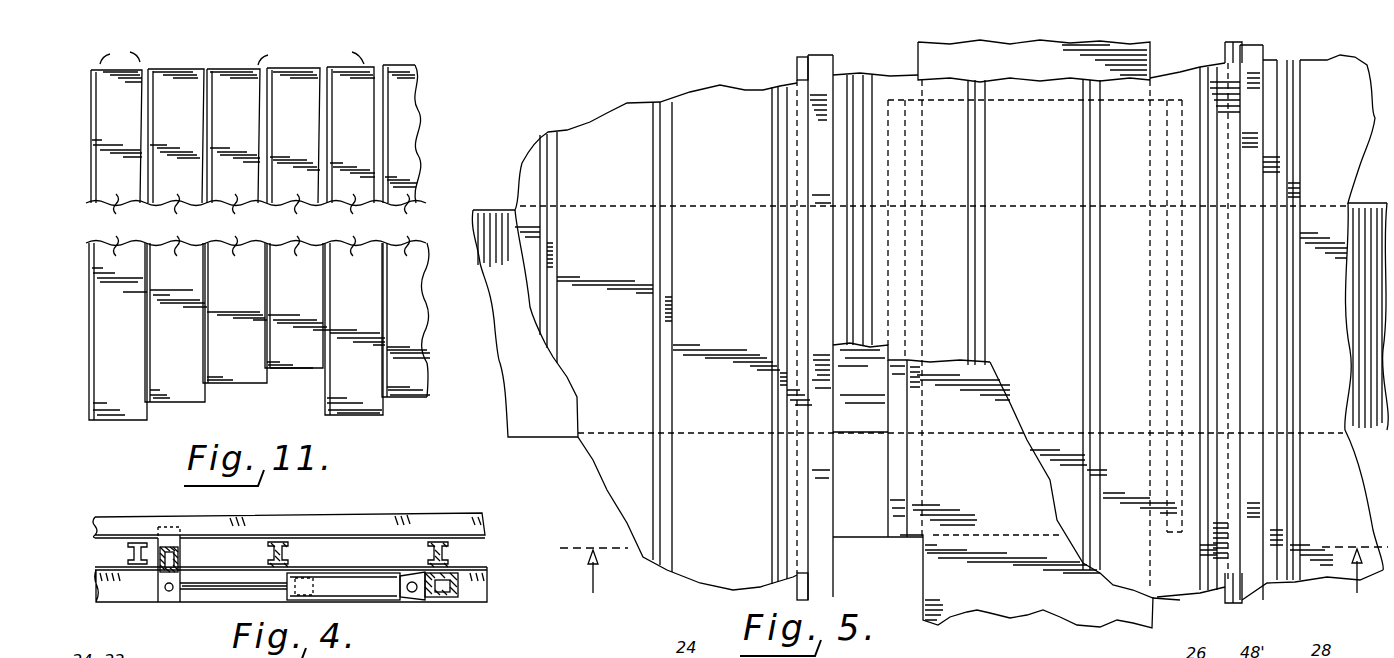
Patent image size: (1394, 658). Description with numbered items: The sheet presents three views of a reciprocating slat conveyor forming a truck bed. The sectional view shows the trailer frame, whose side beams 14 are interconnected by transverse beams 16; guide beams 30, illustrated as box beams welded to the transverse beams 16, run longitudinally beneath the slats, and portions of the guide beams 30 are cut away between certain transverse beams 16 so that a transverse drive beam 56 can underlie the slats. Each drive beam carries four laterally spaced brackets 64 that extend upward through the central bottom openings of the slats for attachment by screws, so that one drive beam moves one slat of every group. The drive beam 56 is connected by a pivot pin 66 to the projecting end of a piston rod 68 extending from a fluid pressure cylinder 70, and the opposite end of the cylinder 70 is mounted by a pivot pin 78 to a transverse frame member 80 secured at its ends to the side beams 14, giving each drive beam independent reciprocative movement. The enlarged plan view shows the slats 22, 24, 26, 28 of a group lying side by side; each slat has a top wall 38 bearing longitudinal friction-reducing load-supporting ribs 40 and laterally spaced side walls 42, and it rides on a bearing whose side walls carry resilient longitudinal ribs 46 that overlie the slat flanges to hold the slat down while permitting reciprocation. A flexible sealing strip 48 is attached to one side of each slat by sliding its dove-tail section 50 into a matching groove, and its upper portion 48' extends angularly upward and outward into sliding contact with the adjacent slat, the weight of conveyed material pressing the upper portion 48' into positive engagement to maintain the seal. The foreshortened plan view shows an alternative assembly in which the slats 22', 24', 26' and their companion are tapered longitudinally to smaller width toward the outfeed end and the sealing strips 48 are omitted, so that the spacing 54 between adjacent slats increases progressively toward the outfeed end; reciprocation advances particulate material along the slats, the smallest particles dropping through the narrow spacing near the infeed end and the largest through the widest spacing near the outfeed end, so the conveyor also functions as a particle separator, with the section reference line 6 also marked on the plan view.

In FIG. 11, the spacing between adjacent slats 54 is at (232, 52).
In FIG. 11, the slat 22' is at (237, 243).
In FIG. 11, the slat 24' is at (287, 233).
In FIG. 11, the slat 26' is at (235, 226).
In FIG. 11, the slat 22 is at (237, 243).
In FIG. 11, the slat 24 is at (287, 233).
In FIG. 11, the slat 26 is at (235, 226).
In FIG. 4, the slat 26 is at (447, 492).
In FIG. 11, the slat 28 is at (296, 218).
In FIG. 4, the side beams 14 is at (118, 587).
In FIG. 4, the transverse beams 16 is at (128, 558).
In FIG. 5, the transverse beams 16 is at (1360, 218).
In FIG. 4, the guide beams 30 is at (112, 517).
In FIG. 5, the guide beams 30 is at (1007, 610).
In FIG. 5, the top wall 38 is at (613, 106).
In FIG. 5, the load-supporting ribs 40 is at (653, 168).
In FIG. 4, the side walls 42 is at (472, 517).
In FIG. 5, the longitudinal ribs 46 is at (888, 463).
In FIG. 5, the upper portion of sealing strip 48' is at (844, 327).
In FIG. 5, the sealing strip 48 is at (844, 327).
In FIG. 5, the dove-tail section 50 is at (797, 65).
In FIG. 4, the drive beam 56 is at (180, 554).
In FIG. 4, the brackets 64 is at (166, 527).
In FIG. 4, the pivot pins 66 is at (166, 592).
In FIG. 4, the piston rods 68 is at (240, 596).
In FIG. 4, the fluid pressure cylinder 70 is at (364, 598).
In FIG. 4, the pivot pins 78 is at (419, 600).
In FIG. 4, the transverse frame member 80 is at (460, 598).
In FIG. 5, the section line 6- 6 is at (974, 586).